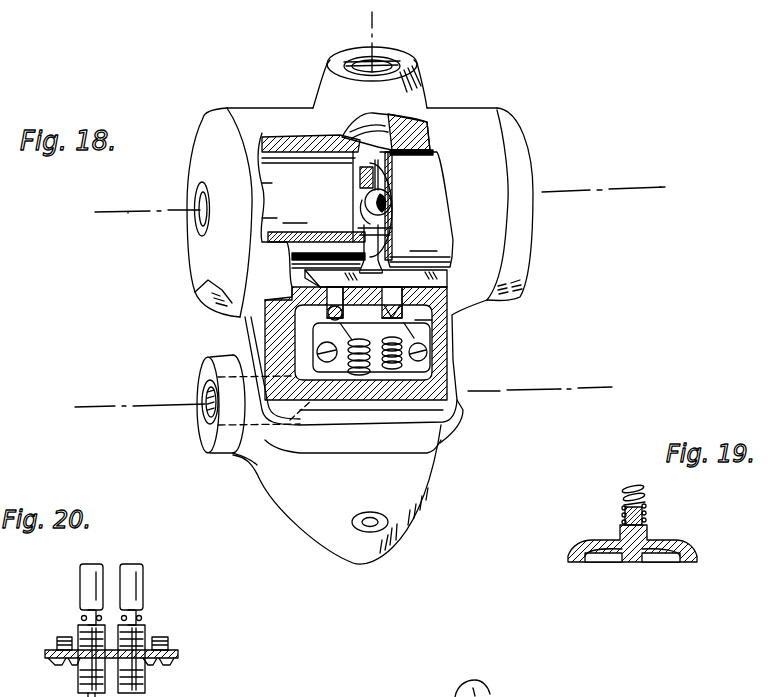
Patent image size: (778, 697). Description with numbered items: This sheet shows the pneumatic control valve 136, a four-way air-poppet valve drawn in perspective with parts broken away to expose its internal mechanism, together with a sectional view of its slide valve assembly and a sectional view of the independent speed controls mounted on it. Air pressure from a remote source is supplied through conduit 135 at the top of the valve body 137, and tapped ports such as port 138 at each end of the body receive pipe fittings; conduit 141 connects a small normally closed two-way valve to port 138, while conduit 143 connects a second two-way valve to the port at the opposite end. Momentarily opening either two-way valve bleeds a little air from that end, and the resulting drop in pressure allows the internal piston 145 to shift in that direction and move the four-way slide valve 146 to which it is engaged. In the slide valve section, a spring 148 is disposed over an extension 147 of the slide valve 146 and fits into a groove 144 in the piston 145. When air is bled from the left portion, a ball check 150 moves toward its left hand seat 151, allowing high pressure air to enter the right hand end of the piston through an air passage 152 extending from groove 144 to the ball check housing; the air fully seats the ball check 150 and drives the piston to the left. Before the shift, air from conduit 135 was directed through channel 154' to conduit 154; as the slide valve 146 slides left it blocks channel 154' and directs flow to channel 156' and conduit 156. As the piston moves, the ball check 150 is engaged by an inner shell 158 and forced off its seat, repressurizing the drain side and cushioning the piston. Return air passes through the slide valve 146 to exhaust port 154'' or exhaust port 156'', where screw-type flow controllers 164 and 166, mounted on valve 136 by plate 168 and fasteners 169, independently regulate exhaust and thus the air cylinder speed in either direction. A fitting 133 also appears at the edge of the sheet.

In FIG. 20, the fitting 133 is at (486, 692).
In FIG. 18, the conduit 135 is at (374, 40).
In FIG. 18, the pneumatic control valve 136 is at (476, 106).
In FIG. 18, the valve body 137 is at (265, 120).
In FIG. 18, the port 138 is at (196, 185).
In FIG. 18, the conduit 141 is at (120, 212).
In FIG. 18, the conduit 143 is at (646, 187).
In FIG. 18, the groove 144 is at (400, 143).
In FIG. 18, the internal piston 145 is at (432, 215).
In FIG. 18, the four-way slide valve 146 is at (440, 268).
In FIG. 19, the four-way slide valve 146 is at (634, 564).
In FIG. 19, the extension 147 is at (627, 518).
In FIG. 19, the spring 148 is at (648, 494).
In FIG. 18, the ball check 150 is at (390, 198).
In FIG. 18, the left hand seat 151 is at (360, 198).
In FIG. 18, the air passage 152 is at (380, 178).
In FIG. 18, the conduit 154 is at (203, 410).
In FIG. 18, the channel 154' is at (321, 343).
In FIG. 18, the exhaust port 154'' is at (295, 293).
In FIG. 18, the conduit 156 is at (583, 372).
In FIG. 18, the channel 156' is at (462, 332).
In FIG. 18, the exhaust port 156'' is at (435, 292).
In FIG. 18, the inner shell 158 is at (300, 218).
In FIG. 18, the flow controller 164 is at (356, 378).
In FIG. 20, the flow controller 164 is at (80, 684).
In FIG. 18, the flow controller 166 is at (390, 372).
In FIG. 20, the flow controller 166 is at (143, 684).
In FIG. 18, the plate 168 is at (436, 372).
In FIG. 20, the plate 168 is at (180, 650).
In FIG. 18, the fasteners 169 is at (430, 354).
In FIG. 20, the fasteners 169 is at (60, 640).